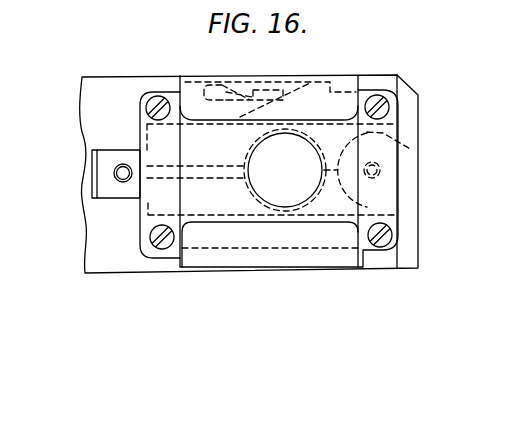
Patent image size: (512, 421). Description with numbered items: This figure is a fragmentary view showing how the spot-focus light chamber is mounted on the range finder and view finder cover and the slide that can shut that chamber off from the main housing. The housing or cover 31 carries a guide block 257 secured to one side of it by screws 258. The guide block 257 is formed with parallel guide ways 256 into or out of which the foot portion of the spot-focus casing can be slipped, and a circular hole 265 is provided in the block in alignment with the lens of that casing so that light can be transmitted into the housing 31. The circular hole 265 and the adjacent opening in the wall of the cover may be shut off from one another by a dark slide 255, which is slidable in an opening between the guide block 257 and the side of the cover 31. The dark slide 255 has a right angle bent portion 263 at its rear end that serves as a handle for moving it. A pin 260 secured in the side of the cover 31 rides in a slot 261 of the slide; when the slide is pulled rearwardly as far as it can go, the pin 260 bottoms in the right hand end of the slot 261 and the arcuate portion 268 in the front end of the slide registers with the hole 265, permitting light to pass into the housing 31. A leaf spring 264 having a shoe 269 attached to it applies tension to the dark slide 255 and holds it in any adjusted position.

The housing or cover 31 is at (118, 87).
The dark slide 255 is at (148, 203).
The guide ways 256 is at (210, 258).
The guide block 257 is at (372, 250).
The screws 258 is at (376, 96).
The pin 260 is at (121, 164).
The slot 261 is at (143, 150).
The right angle bent portion 263 is at (93, 179).
The leaf spring 264 is at (231, 84).
The circular hole 265 is at (291, 192).
The arcuate portion 268 is at (412, 150).
The shoe 269 is at (242, 117).